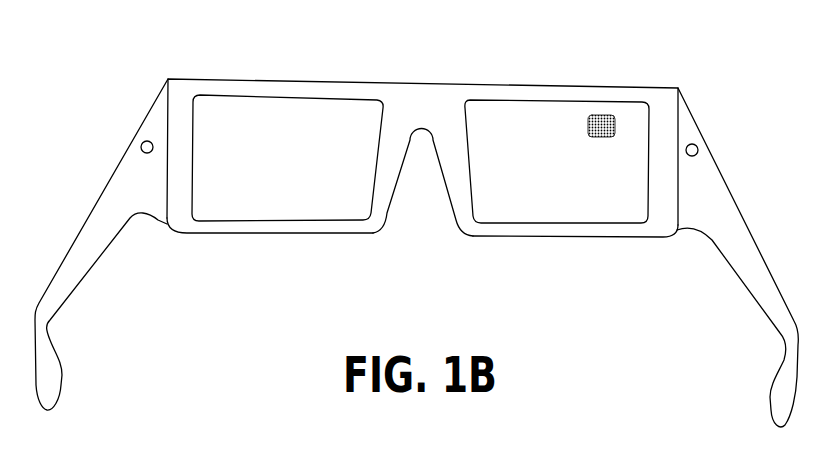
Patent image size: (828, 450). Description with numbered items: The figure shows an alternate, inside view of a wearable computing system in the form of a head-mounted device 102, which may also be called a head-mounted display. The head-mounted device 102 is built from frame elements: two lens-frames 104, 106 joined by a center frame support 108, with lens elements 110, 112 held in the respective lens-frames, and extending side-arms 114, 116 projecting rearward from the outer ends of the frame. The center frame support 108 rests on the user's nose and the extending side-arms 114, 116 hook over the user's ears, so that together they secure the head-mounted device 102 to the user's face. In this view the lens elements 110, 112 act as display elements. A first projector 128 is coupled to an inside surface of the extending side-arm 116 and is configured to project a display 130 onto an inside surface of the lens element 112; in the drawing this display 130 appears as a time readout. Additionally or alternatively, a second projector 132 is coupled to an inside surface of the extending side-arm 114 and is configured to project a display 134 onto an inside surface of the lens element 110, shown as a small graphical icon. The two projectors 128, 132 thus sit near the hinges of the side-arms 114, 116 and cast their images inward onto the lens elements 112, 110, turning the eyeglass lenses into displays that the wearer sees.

The head-mounted device 102 is at (215, 66).
The lens-frame 104 is at (637, 240).
The lens-frame 106 is at (212, 233).
The center frame support 108 is at (420, 82).
The lens element 110 is at (522, 217).
The lens element 112 is at (303, 213).
The extending side-arm 114 is at (730, 192).
The extending side-arm 116 is at (90, 210).
The first projector 128 is at (143, 143).
The display 130 is at (275, 124).
The second projector 132 is at (695, 143).
The display 134 is at (590, 128).